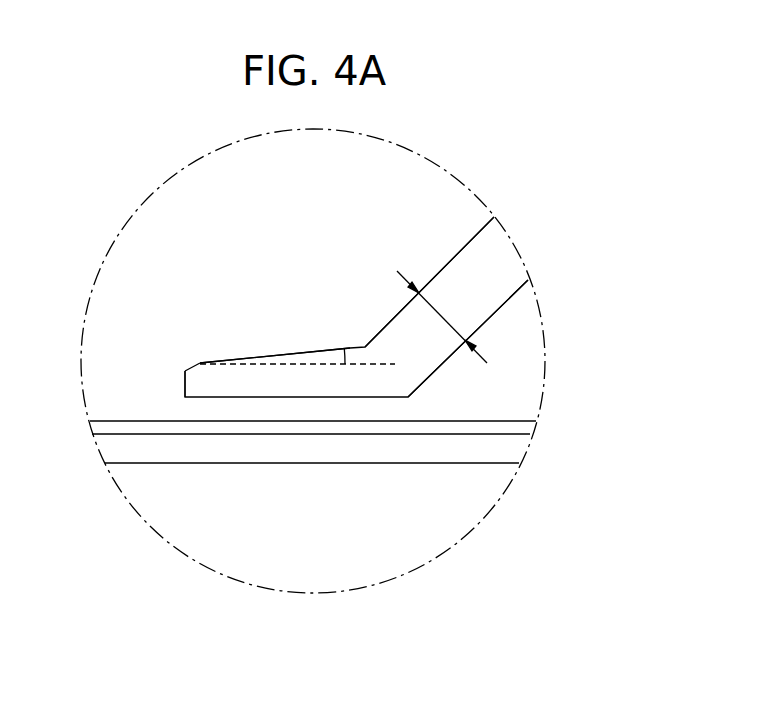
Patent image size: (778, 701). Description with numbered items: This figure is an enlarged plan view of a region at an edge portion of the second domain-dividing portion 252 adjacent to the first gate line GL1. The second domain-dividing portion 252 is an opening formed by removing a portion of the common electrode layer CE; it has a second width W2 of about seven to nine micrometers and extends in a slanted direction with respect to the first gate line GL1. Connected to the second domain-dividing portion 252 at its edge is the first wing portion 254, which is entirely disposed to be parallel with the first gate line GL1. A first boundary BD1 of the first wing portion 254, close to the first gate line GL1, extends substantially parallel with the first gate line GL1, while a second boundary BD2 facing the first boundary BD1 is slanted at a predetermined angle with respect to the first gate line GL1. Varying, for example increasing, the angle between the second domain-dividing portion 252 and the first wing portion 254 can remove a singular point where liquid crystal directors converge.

The second domain-dividing portion 252 is at (492, 262).
The first wing portion 254 is at (302, 381).
The common electrode layer CE is at (510, 380).
The first gate line GL1 is at (488, 452).
The first boundary BD1 is at (207, 367).
The second boundary BD2 is at (288, 353).
The second width W2 is at (442, 317).